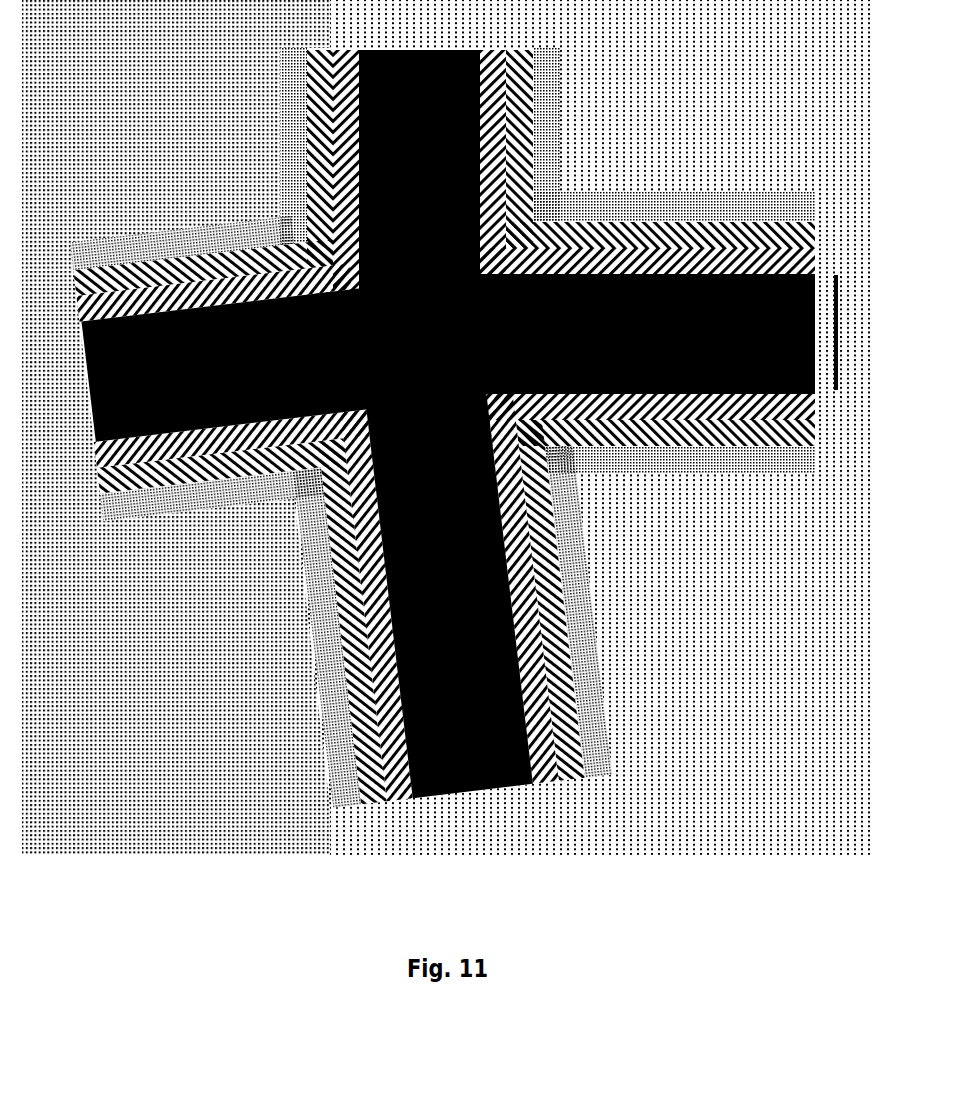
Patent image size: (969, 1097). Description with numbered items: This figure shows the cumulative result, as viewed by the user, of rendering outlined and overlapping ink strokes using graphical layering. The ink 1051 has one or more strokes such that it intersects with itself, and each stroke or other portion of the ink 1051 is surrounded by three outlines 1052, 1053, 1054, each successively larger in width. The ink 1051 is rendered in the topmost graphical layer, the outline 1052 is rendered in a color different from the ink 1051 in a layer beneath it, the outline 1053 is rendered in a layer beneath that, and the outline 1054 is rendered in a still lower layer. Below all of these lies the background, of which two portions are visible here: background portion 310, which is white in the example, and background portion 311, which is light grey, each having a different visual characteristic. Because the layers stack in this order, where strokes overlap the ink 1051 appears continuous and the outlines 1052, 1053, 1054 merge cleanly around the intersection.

The background portion 310 is at (162, 115).
The background portion 311 is at (719, 600).
The ink 1051 is at (448, 440).
The outline 1052 is at (445, 440).
The outline 1053 is at (444, 440).
The outline 1054 is at (442, 439).